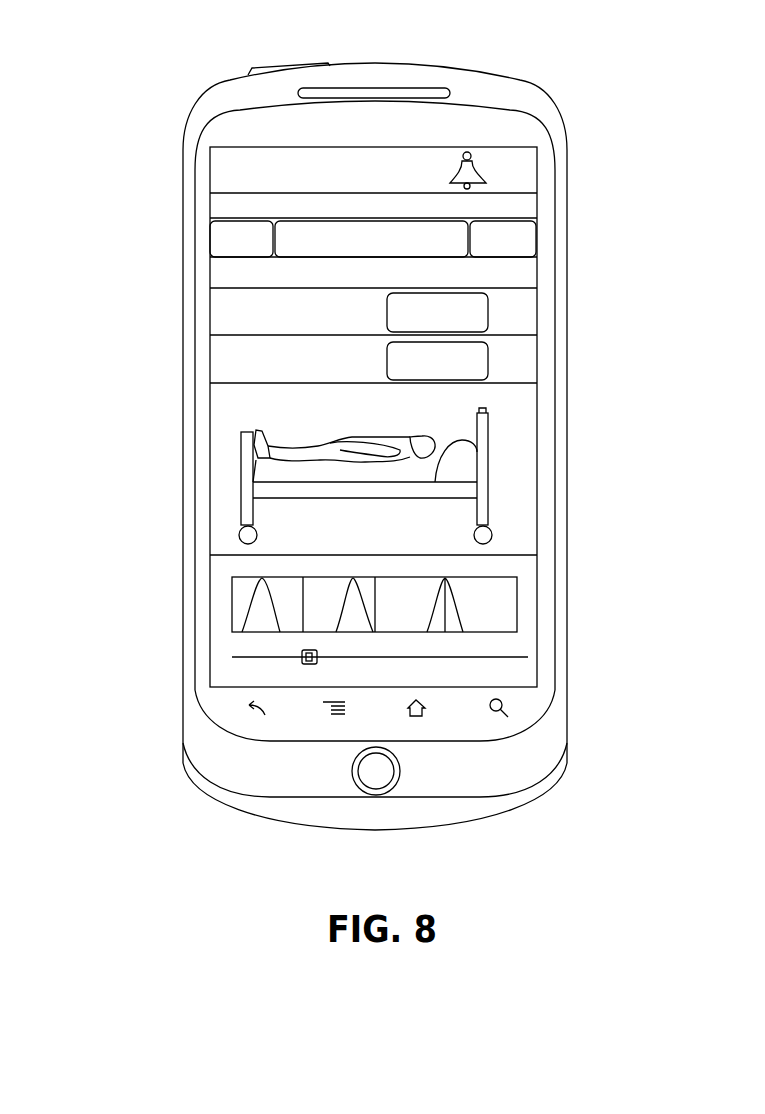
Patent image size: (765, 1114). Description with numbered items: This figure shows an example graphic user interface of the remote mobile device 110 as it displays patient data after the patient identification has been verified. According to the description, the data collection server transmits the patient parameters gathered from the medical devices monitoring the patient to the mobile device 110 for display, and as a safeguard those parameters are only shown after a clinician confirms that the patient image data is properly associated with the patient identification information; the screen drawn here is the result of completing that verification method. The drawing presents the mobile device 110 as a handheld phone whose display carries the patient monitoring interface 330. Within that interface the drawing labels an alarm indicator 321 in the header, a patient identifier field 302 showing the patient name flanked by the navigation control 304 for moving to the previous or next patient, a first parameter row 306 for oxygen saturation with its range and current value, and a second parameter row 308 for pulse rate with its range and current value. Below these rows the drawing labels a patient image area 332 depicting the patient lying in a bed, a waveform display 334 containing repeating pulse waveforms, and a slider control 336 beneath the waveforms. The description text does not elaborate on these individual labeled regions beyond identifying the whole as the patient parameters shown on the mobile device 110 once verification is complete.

The mobile device 110 is at (585, 60).
The patient monitoring display screen 330 is at (153, 265).
The alarm indicator icon 321 is at (480, 165).
The patient navigation buttons (PREV/NEXT) 304 is at (210, 238).
The patient identifier field 302 is at (457, 250).
The SpO2 parameter row 306 is at (210, 313).
The pulse rate parameter row 308 is at (210, 365).
The patient position/bed image 332 is at (538, 458).
The waveform display 334 is at (517, 607).
The time slider control 336 is at (520, 657).